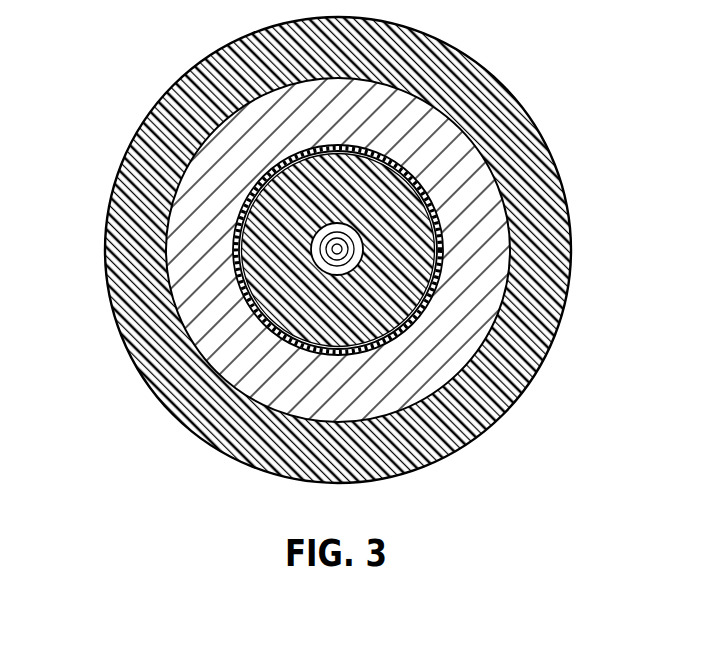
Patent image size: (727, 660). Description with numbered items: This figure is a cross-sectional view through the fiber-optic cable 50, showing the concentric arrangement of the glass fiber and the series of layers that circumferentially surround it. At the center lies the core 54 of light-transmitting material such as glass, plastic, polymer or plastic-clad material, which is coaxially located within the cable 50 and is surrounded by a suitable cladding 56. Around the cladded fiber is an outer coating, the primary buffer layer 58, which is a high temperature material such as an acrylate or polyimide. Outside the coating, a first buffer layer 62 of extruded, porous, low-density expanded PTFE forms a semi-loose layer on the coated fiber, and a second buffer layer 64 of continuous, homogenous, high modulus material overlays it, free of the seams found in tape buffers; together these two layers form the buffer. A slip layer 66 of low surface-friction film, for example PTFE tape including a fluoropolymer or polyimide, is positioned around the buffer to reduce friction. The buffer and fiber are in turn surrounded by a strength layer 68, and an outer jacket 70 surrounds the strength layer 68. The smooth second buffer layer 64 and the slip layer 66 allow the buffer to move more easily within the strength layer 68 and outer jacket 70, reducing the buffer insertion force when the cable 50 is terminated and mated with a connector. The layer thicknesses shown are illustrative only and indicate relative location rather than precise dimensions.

The cable 50 is at (518, 73).
The core 54 is at (340, 248).
The cladding 56 is at (440, 235).
The primary buffer layer 58 is at (243, 290).
The first buffer layer 62 is at (337, 250).
The second buffer layer 64 is at (237, 238).
The slip layer 66 is at (237, 230).
The strength layer 68 is at (495, 230).
The outer jacket 70 is at (562, 252).